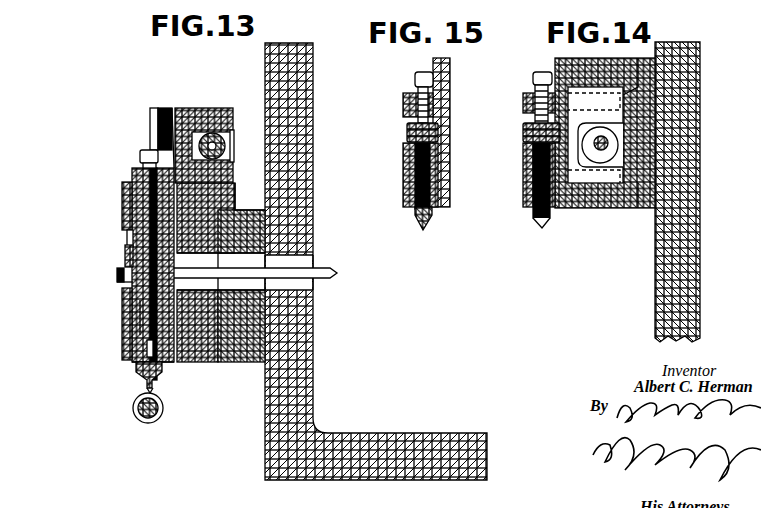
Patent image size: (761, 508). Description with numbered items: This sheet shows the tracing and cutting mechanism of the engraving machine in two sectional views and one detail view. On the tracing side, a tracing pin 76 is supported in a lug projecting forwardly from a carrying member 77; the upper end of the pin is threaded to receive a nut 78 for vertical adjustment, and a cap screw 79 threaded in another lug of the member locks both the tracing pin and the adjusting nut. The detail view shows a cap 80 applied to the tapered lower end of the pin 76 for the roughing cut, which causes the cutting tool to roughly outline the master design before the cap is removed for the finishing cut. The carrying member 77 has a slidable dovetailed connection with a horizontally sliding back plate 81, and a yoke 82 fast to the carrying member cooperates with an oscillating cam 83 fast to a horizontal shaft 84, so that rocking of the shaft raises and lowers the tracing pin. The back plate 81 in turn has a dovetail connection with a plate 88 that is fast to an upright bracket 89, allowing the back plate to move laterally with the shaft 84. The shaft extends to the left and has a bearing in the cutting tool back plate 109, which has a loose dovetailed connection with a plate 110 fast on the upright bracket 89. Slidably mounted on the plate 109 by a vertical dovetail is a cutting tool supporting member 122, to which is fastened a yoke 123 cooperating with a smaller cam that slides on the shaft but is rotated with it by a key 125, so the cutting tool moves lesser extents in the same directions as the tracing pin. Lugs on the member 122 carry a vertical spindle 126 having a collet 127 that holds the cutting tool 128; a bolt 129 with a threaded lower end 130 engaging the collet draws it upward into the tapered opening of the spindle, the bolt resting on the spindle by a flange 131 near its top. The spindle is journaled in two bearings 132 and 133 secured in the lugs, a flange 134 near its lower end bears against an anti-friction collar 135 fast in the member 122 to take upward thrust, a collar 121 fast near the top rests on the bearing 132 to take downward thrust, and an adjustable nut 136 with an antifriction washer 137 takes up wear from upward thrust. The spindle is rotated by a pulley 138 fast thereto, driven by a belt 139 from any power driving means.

In FIG. 15, the tracing pin 76 is at (403, 177).
In FIG. 14, the tracing pin 76 is at (533, 212).
In FIG. 15, the carrying member 77 is at (440, 210).
In FIG. 14, the carrying member 77 is at (555, 63).
In FIG. 15, the nut 78 is at (407, 138).
In FIG. 14, the nut 78 is at (525, 138).
In FIG. 15, the cap screw 79 is at (413, 79).
In FIG. 14, the cap screw 79 is at (533, 77).
In FIG. 15, the cap 80 is at (415, 222).
In FIG. 14, the back plate 81 is at (625, 195).
In FIG. 14, the yoke 82 is at (620, 170).
In FIG. 14, the oscillating cam 83 is at (620, 153).
In FIG. 13, the horizontal shaft 84 is at (226, 140).
In FIG. 14, the horizontal shaft 84 is at (617, 140).
In FIG. 14, the plate 88 is at (647, 73).
In FIG. 13, the upright bracket 89 is at (273, 395).
In FIG. 14, the upright bracket 89 is at (683, 213).
In FIG. 13, the cutting tool back plate 109 is at (226, 150).
In FIG. 13, the plate 110 is at (253, 352).
In FIG. 13, the collar 121 is at (137, 168).
In FIG. 13, the cutting tool supporting member 122 is at (150, 122).
In FIG. 13, the yoke 123 is at (217, 108).
In FIG. 13, the key 125 is at (216, 144).
In FIG. 13, the vertical spindle 126 is at (140, 371).
In FIG. 13, the collet 127 is at (147, 388).
In FIG. 13, the cutting tool 128 is at (150, 400).
In FIG. 13, the bolt 129 is at (140, 151).
In FIG. 13, the threaded lower end 130 is at (138, 333).
In FIG. 13, the flange 131 is at (138, 162).
In FIG. 13, the bearing 132 is at (127, 197).
In FIG. 13, the bearing 133 is at (137, 308).
In FIG. 13, the flange 134 is at (132, 367).
In FIG. 13, the anti-friction collar 135 is at (137, 352).
In FIG. 13, the adjustable nut 136 is at (128, 253).
In FIG. 13, the antifriction washer 137 is at (133, 238).
In FIG. 13, the pulley 138 is at (117, 277).
In FIG. 13, the belt 139 is at (332, 279).